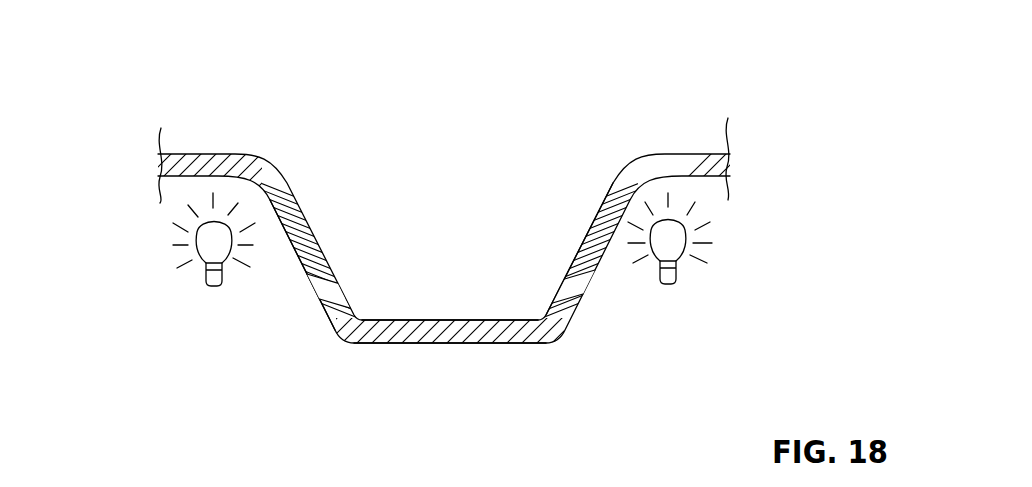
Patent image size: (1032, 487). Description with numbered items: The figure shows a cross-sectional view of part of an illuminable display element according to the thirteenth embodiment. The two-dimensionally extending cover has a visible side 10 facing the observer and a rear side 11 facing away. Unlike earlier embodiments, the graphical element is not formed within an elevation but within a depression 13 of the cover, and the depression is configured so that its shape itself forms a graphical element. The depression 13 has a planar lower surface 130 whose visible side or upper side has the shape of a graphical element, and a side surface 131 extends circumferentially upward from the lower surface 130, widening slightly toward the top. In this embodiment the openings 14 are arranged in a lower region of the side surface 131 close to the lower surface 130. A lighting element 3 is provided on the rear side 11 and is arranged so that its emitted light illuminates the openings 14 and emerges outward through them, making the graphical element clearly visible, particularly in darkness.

The visible side 10 is at (492, 243).
The rear side 11 is at (380, 343).
The depression 13 is at (327, 242).
The lower surface 130 is at (453, 318).
The side surface 131 is at (581, 240).
The openings 14 is at (572, 300).
The lighting element 3 is at (657, 257).